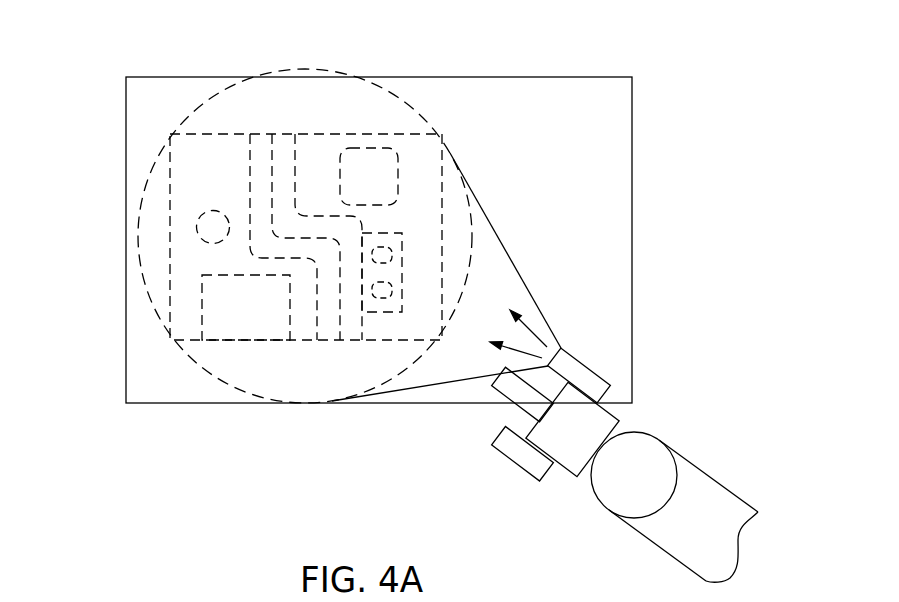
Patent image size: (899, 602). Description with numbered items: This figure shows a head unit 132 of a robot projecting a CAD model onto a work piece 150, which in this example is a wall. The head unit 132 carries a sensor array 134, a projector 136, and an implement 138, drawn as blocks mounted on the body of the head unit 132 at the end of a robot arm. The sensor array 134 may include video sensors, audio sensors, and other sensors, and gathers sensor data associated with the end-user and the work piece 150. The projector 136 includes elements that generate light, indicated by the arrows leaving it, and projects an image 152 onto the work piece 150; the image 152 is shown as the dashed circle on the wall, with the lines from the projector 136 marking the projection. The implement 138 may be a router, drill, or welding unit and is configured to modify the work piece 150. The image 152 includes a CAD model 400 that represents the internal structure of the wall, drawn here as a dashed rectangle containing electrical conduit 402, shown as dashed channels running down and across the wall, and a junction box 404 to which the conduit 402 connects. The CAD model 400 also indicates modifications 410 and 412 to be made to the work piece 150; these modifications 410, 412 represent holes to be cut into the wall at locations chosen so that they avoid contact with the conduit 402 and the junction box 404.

The head unit 132 is at (522, 415).
The sensor array 134 is at (506, 455).
The projector 136 is at (583, 364).
The implement 138 is at (499, 400).
The work piece 150 is at (567, 124).
The image 152 is at (297, 69).
The CAD model 400 is at (442, 170).
The electrical conduit 402 is at (295, 167).
The junction box 404 is at (402, 273).
The modification 410 is at (229, 320).
The modification 412 is at (352, 187).